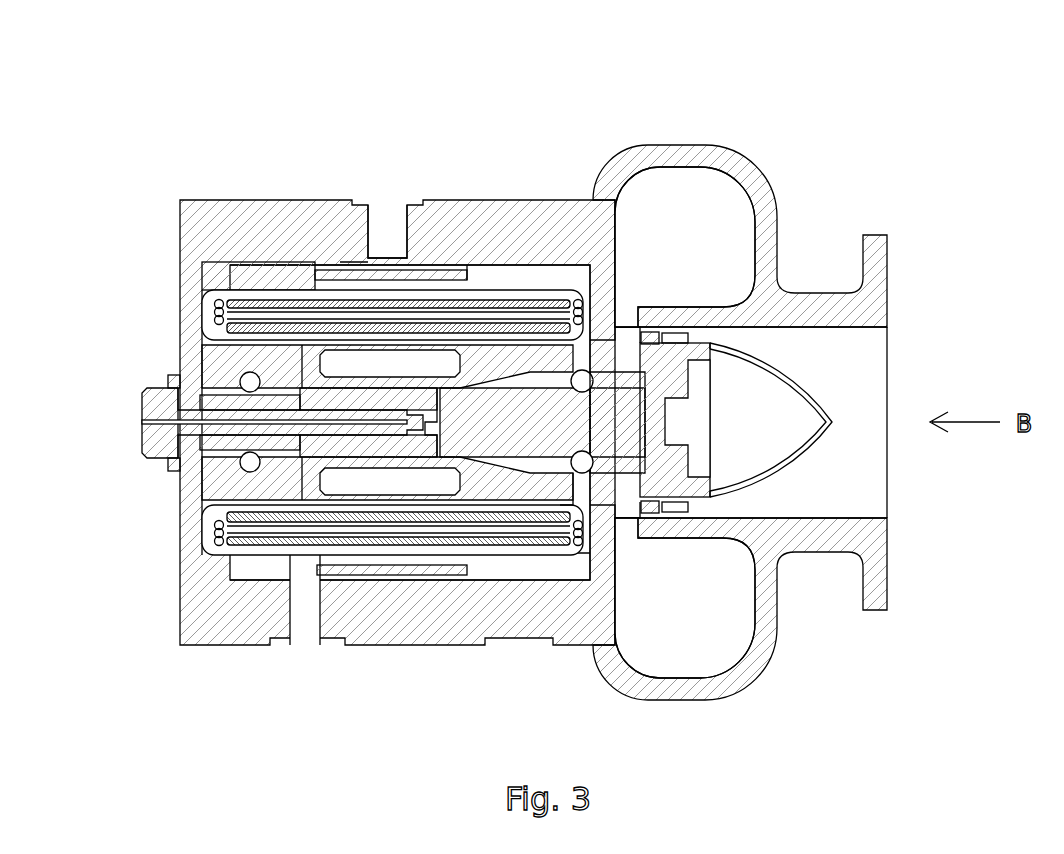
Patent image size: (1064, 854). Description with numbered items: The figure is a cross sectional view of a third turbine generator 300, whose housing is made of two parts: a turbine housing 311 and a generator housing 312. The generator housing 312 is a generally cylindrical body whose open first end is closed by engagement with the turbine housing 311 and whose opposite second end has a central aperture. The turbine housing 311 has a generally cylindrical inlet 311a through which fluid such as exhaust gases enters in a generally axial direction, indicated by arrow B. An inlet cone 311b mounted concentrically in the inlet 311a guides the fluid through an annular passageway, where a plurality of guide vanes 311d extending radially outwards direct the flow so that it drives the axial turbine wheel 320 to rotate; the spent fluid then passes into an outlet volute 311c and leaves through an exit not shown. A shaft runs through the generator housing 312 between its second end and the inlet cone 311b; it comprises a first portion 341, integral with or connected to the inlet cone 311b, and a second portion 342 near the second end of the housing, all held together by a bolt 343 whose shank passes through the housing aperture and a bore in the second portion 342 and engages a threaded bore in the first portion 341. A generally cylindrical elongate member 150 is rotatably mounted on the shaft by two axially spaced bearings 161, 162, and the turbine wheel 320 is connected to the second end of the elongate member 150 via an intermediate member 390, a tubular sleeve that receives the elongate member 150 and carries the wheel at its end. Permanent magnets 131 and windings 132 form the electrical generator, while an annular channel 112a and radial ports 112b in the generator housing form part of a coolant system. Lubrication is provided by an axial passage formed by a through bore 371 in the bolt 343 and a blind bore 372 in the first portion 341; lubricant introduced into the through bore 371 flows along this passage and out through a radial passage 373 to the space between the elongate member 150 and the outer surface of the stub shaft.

The turbine generator 300 is at (860, 96).
The turbine housing 311 is at (687, 128).
The inlet 311a is at (873, 494).
The inlet cone 311b is at (807, 380).
The outlet volute 311c is at (702, 212).
The guide vanes 311d is at (678, 510).
The generator housing 312 is at (256, 190).
The annular channel 112a is at (350, 262).
The radial ports 112b is at (388, 205).
The permanent magnets 131 is at (300, 470).
The windings 132 is at (388, 556).
The elongate member 150 is at (245, 355).
The bearing 161 is at (248, 462).
The bearing 162 is at (598, 507).
The axial turbine wheel 320 is at (640, 510).
The first portion of the shaft 341 is at (425, 407).
The second portion of the shaft 342 is at (212, 395).
The bolt 343 is at (153, 415).
The through bore 371 is at (158, 425).
The blind bore 372 is at (445, 432).
The radial passage 373 is at (540, 430).
The intermediate member 390 is at (613, 340).